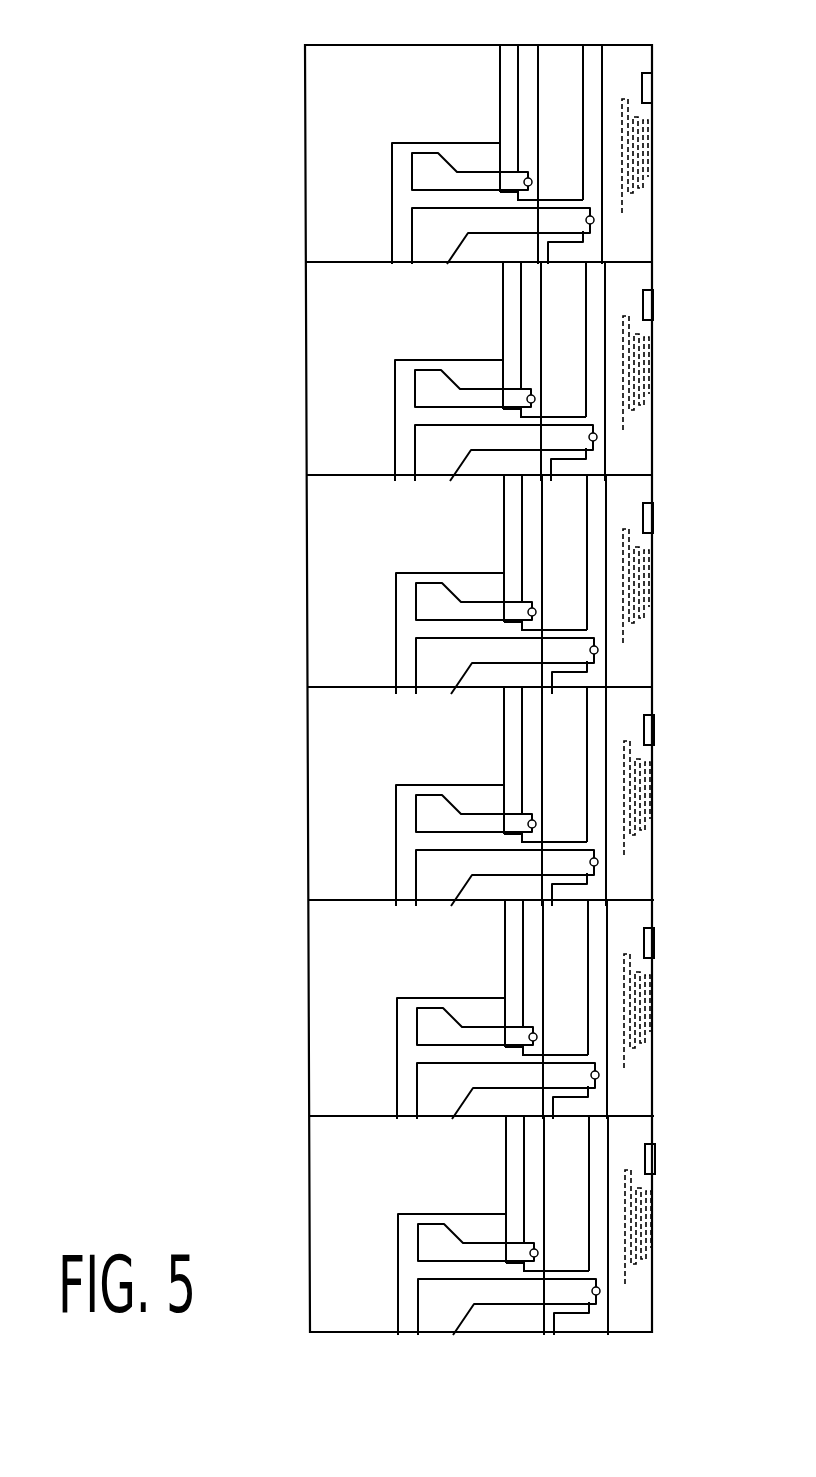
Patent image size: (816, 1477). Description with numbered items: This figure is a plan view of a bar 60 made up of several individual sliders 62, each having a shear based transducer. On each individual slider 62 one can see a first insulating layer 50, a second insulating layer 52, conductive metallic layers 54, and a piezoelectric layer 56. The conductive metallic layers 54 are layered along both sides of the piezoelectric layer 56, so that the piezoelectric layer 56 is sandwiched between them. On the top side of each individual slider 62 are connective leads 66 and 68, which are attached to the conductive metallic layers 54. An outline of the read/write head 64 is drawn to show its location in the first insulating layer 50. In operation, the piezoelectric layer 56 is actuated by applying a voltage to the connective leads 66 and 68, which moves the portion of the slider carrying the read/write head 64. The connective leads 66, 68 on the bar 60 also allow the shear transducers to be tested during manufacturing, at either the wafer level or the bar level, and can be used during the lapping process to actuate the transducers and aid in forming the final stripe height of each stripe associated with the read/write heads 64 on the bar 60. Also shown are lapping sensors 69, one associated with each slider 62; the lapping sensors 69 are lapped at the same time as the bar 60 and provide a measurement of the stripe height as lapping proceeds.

The first insulating layer 50 is at (630, 47).
The second insulating layer 52 is at (500, 97).
The conductive metallic layers 54 is at (526, 66).
The piezoelectric layer 56 is at (553, 57).
The bar 60 is at (165, 260).
The individual sliders 62 is at (280, 143).
The read/write head 64 is at (662, 127).
The connective lead 66 is at (380, 153).
The connective lead 68 is at (380, 222).
The lapping sensor 69 is at (650, 89).